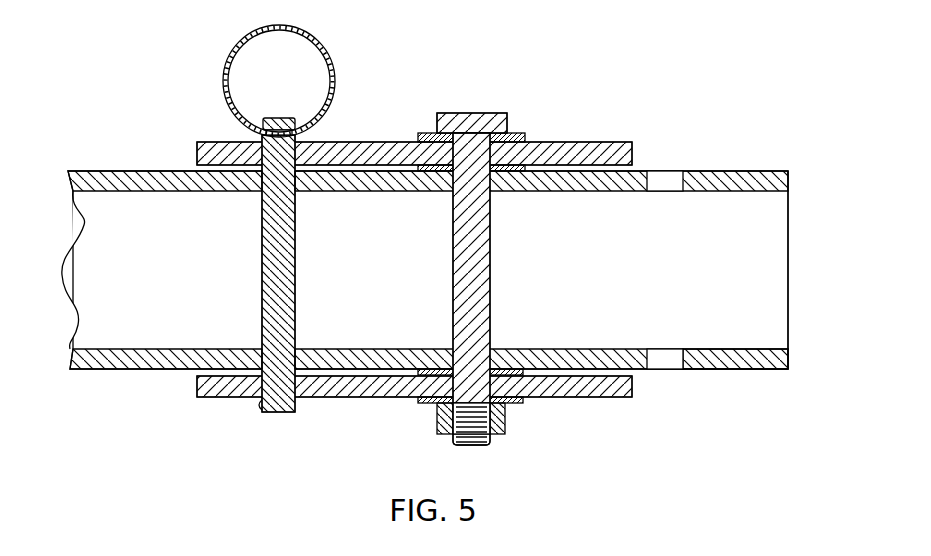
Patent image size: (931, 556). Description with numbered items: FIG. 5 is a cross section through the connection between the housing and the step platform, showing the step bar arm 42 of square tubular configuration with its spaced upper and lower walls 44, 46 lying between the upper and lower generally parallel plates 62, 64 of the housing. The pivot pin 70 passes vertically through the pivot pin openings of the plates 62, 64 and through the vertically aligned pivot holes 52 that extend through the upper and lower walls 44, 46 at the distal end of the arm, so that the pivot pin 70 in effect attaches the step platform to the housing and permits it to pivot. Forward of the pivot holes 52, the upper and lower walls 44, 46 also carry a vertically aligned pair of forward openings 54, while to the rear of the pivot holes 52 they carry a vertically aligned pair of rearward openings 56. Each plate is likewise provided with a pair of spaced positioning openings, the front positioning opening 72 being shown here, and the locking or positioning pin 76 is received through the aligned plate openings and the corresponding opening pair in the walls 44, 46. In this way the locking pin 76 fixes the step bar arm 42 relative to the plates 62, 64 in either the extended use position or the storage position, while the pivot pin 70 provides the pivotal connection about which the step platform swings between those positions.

The step bar arm 42 is at (790, 182).
The upper wall 44 is at (753, 175).
The lower wall 46 is at (767, 358).
The pivot holes 52 is at (481, 188).
The forward openings 54 is at (270, 345).
The rearward openings 56 is at (680, 178).
The upper plate 62 is at (578, 150).
The lower plate 64 is at (342, 387).
The pivot pin 70 is at (477, 280).
The front positioning opening 72 is at (296, 137).
The locking pin 76 is at (285, 278).